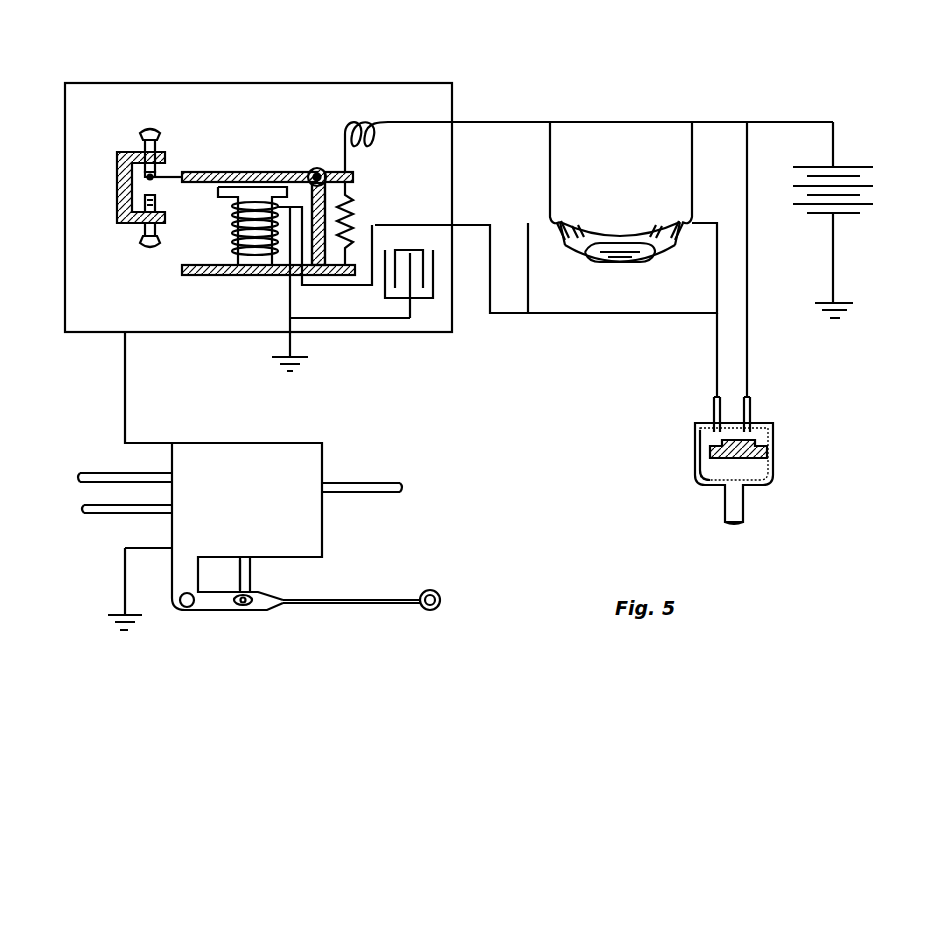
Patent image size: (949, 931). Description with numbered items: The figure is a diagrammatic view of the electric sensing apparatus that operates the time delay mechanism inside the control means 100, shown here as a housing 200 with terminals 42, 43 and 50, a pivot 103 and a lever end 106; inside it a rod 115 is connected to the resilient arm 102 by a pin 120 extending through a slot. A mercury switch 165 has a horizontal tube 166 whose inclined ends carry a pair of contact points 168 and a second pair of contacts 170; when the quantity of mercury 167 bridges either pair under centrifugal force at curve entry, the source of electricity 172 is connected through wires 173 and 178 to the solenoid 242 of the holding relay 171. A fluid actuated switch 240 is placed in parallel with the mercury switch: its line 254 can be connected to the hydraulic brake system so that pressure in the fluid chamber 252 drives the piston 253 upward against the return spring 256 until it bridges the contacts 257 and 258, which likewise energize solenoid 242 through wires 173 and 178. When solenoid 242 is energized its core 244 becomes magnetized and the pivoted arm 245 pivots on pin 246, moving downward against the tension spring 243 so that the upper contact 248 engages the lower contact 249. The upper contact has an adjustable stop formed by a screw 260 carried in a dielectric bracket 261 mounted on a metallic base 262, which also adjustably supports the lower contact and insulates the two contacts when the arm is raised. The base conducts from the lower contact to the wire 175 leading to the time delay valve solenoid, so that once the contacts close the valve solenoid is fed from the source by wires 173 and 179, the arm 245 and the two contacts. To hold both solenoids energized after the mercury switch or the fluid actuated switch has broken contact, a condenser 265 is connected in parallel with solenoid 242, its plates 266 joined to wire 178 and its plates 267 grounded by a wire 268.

The holding relay 171 is at (250, 82).
The wire 179 is at (500, 122).
The wire 173 is at (714, 122).
The source of electricity 172 is at (855, 167).
The wire 178 is at (385, 225).
The mercury switch 165 is at (592, 222).
The horizontal tube 166 is at (632, 238).
The quantity of mercury 167 is at (634, 258).
The contact points 168 is at (563, 240).
The contacts 170 is at (672, 240).
The pivoted arm 245 is at (200, 172).
The pin 246 is at (315, 170).
The tension spring 243 is at (353, 212).
The core 244 is at (228, 268).
The solenoid 242 is at (235, 213).
The dielectric bracket 261 is at (118, 160).
The screw 260 is at (157, 133).
The upper contact 248 is at (152, 186).
The lower contact 249 is at (155, 202).
The metallic base 262 is at (140, 226).
The condenser 265 is at (430, 304).
The plates 266 is at (425, 270).
The plates 267 is at (433, 292).
The wire 268 is at (338, 318).
The wire 175 is at (125, 402).
The control means 100 is at (205, 443).
The switch housing 200 is at (265, 443).
The rod 115 is at (252, 573).
The terminal 42 is at (110, 476).
The terminal 43 is at (130, 508).
The terminal 50 is at (370, 485).
The pivot pin 103 is at (182, 608).
The pin 120 is at (240, 608).
The resilient arm 102 is at (265, 605).
The lever end ring 106 is at (440, 597).
The fluid actuated switch 240 is at (778, 424).
The contact 257 is at (713, 406).
The contact 258 is at (752, 405).
The return spring 256 is at (770, 443).
The piston 253 is at (698, 452).
The fluid chamber 252 is at (710, 472).
The line 254 is at (735, 505).